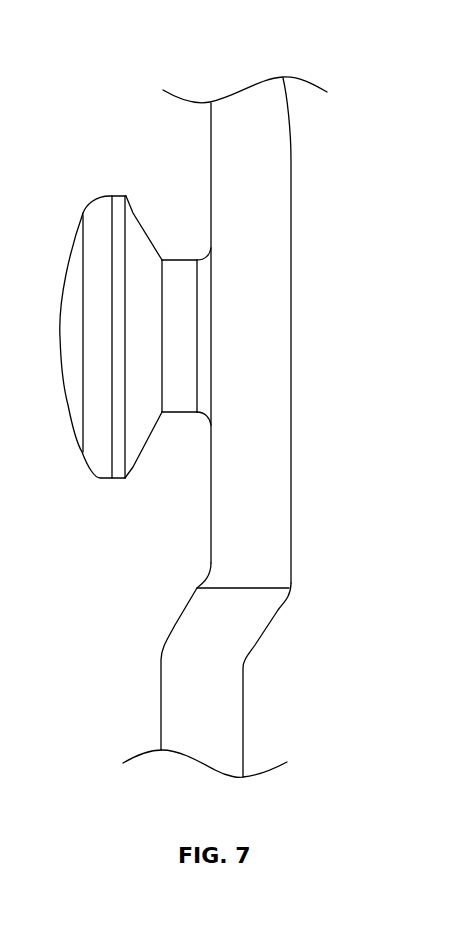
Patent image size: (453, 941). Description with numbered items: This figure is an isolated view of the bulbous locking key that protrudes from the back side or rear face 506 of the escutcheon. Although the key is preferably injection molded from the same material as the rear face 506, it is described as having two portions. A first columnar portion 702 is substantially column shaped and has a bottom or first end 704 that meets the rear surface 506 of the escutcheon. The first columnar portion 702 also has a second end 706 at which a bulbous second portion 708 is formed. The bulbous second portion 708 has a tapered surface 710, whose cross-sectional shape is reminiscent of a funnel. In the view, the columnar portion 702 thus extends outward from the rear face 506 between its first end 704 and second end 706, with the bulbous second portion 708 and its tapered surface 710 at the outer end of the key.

The rear face 506 is at (160, 660).
The first columnar portion 702 is at (184, 258).
The first end 704 is at (213, 347).
The second end 706 is at (185, 414).
The bulbous second portion 708 is at (77, 242).
The tapered surface 710 is at (133, 212).